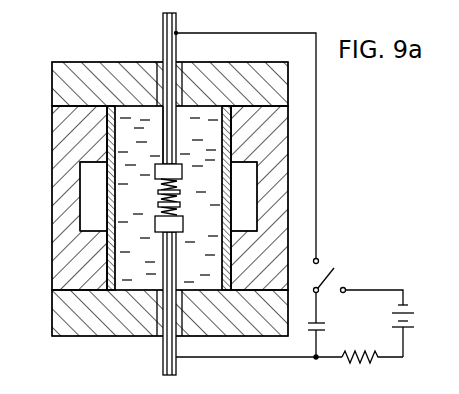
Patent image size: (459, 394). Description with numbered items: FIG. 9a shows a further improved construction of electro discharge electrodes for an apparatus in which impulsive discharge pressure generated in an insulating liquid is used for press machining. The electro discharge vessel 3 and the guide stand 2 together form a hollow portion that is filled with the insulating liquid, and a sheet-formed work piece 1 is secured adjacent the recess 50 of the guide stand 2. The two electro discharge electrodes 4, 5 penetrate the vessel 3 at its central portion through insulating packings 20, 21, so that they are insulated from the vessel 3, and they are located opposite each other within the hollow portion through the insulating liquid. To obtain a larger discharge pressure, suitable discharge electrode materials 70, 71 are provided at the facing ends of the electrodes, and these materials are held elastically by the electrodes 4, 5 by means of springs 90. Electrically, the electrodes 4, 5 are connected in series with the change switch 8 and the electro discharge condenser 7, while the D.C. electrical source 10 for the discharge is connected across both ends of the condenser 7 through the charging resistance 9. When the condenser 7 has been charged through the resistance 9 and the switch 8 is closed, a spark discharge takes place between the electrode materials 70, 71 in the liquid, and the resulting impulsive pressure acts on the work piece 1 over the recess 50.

The work piece 1 is at (116, 127).
The guide stand 2 is at (52, 188).
The electro discharge vessel 3 is at (58, 86).
The electro discharge electrode 4 is at (176, 126).
The electro discharge electrode 5 is at (180, 268).
The electro discharge condenser 7 is at (330, 328).
The switch 8 is at (337, 273).
The charging resistance 9 is at (364, 362).
The D.C. electrical source 10 is at (416, 322).
The insulating packing 20 is at (160, 60).
The insulating packing 21 is at (162, 337).
The recess 50 is at (90, 232).
The discharge electrode material 70 is at (158, 192).
The discharge electrode material 71 is at (158, 204).
The spring 90 is at (178, 184).